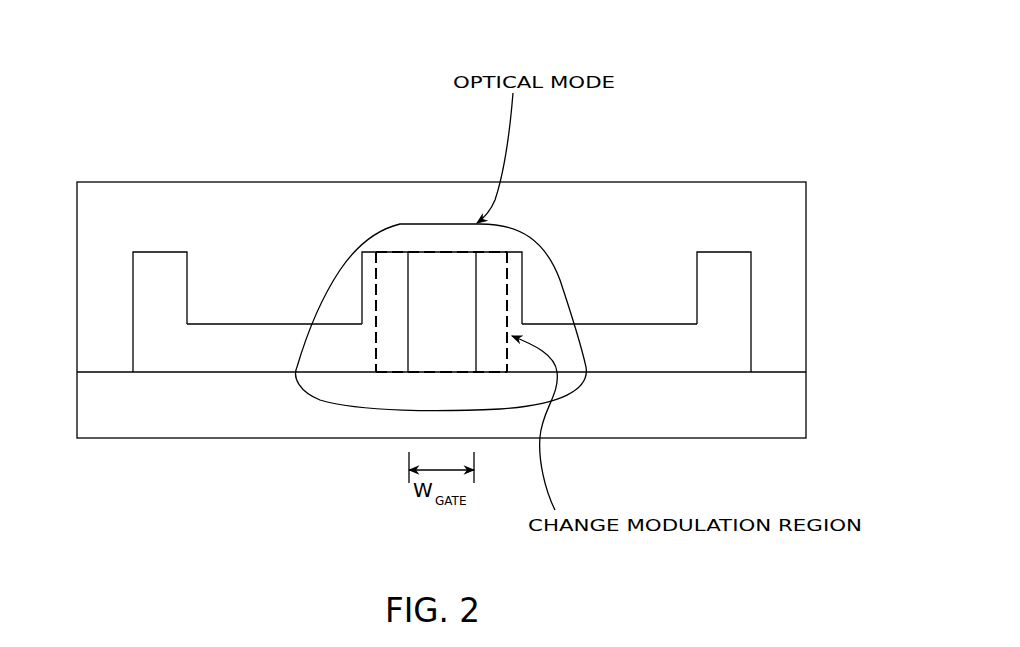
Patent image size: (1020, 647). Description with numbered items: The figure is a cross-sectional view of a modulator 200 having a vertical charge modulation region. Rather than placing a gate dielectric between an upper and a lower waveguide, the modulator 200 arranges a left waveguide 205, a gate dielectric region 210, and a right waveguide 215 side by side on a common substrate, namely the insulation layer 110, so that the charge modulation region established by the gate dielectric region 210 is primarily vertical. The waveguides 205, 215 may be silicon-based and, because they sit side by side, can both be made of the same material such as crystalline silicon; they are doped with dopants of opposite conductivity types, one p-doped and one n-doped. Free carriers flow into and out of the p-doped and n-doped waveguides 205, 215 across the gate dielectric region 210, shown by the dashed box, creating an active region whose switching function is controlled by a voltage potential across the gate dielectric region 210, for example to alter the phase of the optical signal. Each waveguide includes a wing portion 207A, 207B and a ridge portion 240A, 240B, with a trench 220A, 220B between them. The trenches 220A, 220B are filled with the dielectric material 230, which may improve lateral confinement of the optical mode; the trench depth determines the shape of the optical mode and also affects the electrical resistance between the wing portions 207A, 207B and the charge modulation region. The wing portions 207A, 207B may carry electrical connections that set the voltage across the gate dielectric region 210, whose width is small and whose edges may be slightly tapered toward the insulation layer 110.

The modulator 200 is at (645, 82).
The insulation layer 110 is at (772, 414).
The dielectric material 230 is at (150, 215).
The left waveguide 205 is at (163, 253).
The right waveguide 215 is at (722, 253).
The trench 220A is at (228, 313).
The trench 220B is at (653, 313).
The wing portion 207A is at (162, 310).
The wing portion 207B is at (726, 312).
The gate dielectric region 210 is at (425, 248).
The ridge portion 240A is at (370, 280).
The ridge portion 240B is at (510, 278).